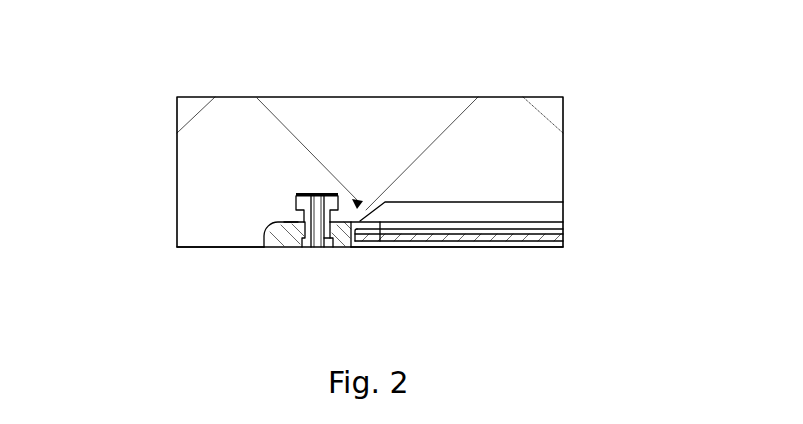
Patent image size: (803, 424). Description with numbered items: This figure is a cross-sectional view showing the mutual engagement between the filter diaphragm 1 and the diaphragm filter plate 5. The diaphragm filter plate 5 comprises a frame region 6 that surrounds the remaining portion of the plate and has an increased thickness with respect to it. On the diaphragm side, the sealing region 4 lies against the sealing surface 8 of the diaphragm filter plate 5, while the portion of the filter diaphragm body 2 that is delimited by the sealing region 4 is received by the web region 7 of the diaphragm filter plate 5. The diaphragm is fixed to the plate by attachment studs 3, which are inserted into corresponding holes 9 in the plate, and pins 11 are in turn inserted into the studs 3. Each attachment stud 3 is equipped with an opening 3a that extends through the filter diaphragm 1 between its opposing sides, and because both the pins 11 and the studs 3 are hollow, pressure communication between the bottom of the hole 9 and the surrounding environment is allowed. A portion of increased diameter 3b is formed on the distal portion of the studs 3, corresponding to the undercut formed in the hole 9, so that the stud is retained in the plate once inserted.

The filter diaphragm 1 is at (406, 256).
The filter diaphragm body 2 is at (550, 248).
The attachment stud 3 is at (362, 220).
The opening 3a is at (320, 193).
The portion of increased diameter 3b is at (298, 193).
The sealing region 4 is at (273, 247).
The diaphragm filter plate 5 is at (165, 135).
The frame region 6 is at (217, 247).
The web region 7 is at (513, 202).
The sealing surface 8 is at (292, 220).
The hole 9 is at (340, 195).
The pin 11 is at (330, 248).